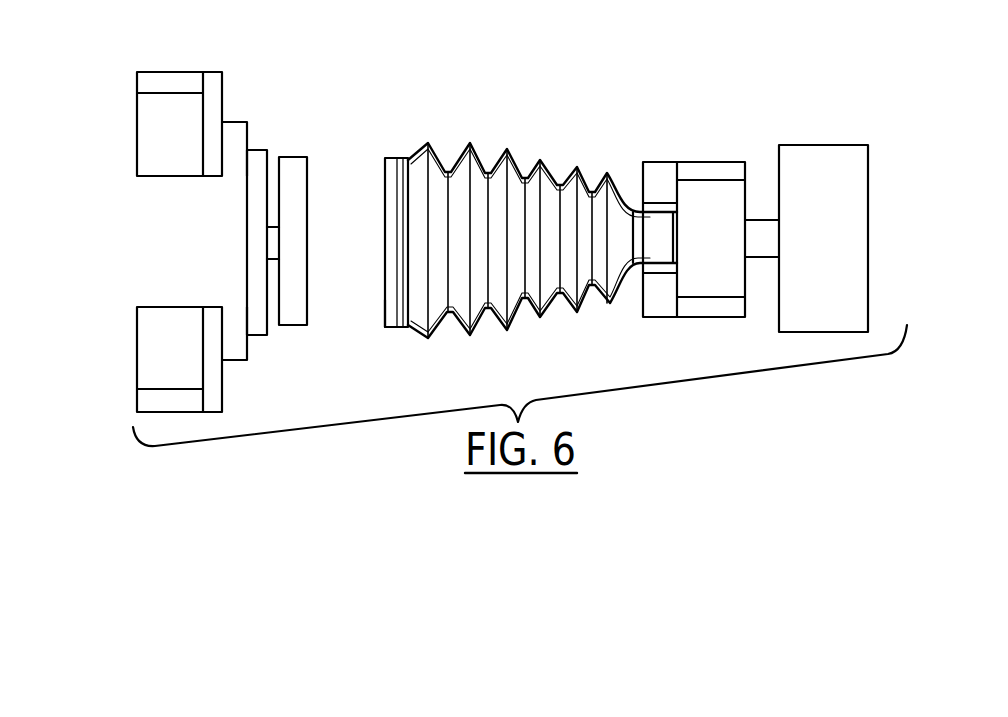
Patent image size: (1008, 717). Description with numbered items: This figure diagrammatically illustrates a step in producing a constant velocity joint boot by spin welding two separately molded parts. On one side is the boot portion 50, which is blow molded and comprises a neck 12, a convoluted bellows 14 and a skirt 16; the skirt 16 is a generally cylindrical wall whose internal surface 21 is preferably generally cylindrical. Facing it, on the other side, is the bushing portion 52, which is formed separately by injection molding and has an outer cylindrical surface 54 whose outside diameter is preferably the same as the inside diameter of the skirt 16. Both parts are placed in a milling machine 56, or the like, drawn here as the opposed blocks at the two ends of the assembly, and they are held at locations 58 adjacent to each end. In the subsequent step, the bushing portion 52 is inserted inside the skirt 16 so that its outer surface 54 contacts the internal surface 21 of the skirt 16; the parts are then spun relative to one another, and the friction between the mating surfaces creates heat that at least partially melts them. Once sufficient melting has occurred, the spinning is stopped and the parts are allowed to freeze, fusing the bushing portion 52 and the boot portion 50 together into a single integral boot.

The neck 12 is at (637, 197).
The bellows 14 is at (537, 157).
The skirt 16 is at (392, 157).
The internal surface of skirt 21 is at (378, 308).
The boot portion 50 is at (492, 133).
The bushing portion 52 is at (293, 123).
The outer cylindrical surface 54 is at (293, 316).
The milling machine 56 is at (127, 213).
The locations 58 is at (263, 130).